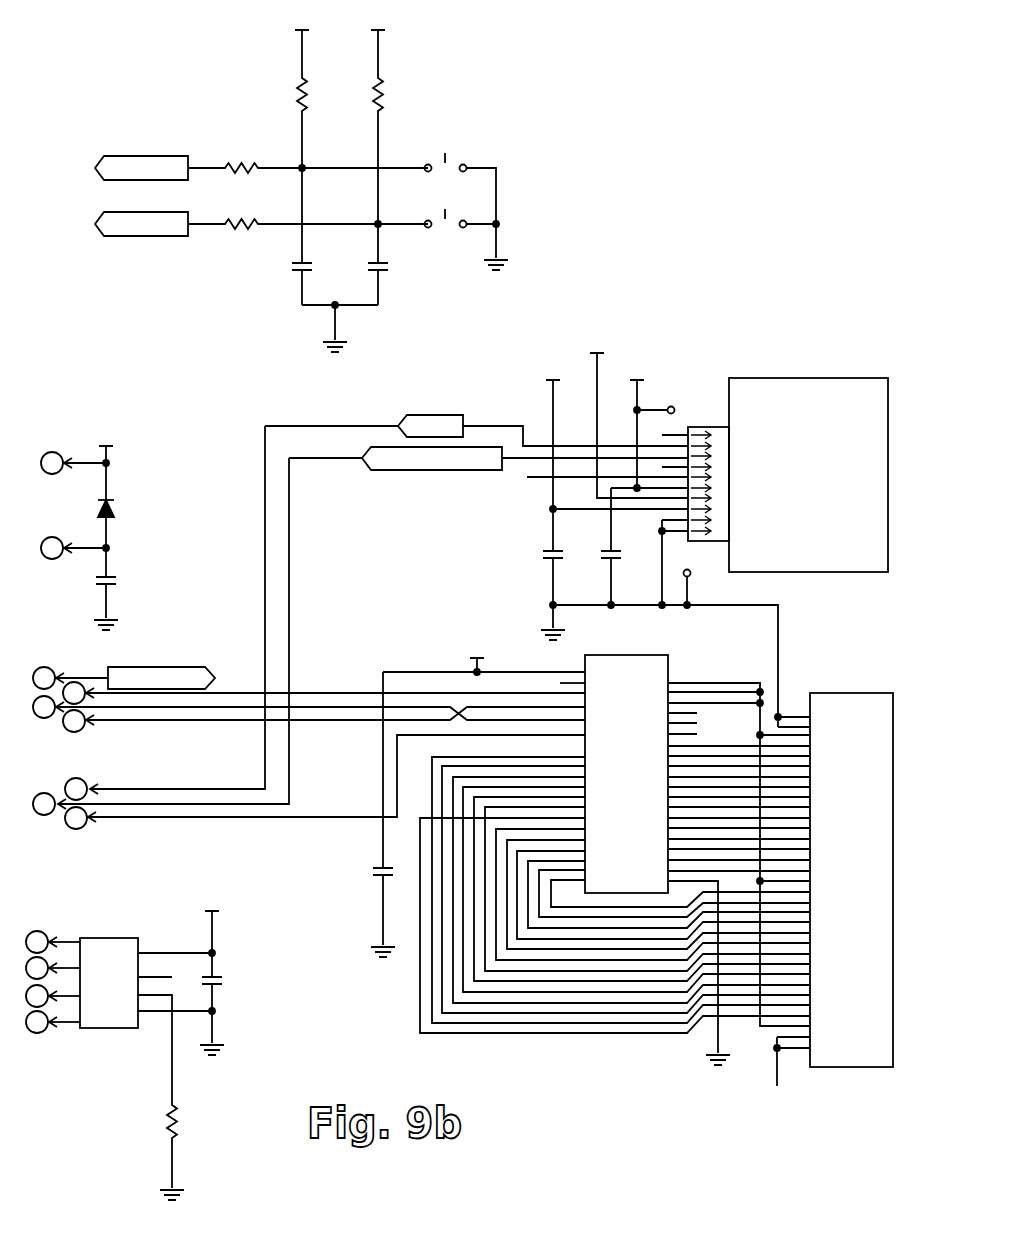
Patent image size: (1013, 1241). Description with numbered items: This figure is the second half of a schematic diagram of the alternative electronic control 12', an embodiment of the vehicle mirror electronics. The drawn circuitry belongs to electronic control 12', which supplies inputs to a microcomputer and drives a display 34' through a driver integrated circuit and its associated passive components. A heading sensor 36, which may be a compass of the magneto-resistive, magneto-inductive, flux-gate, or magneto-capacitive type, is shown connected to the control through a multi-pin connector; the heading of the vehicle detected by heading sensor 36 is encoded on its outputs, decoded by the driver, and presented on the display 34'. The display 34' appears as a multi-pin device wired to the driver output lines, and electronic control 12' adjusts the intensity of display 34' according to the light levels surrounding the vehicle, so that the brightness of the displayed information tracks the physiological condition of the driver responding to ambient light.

The alternative electronic control 12' is at (459, 603).
The heading sensor 36 is at (800, 377).
The display 34' is at (833, 904).